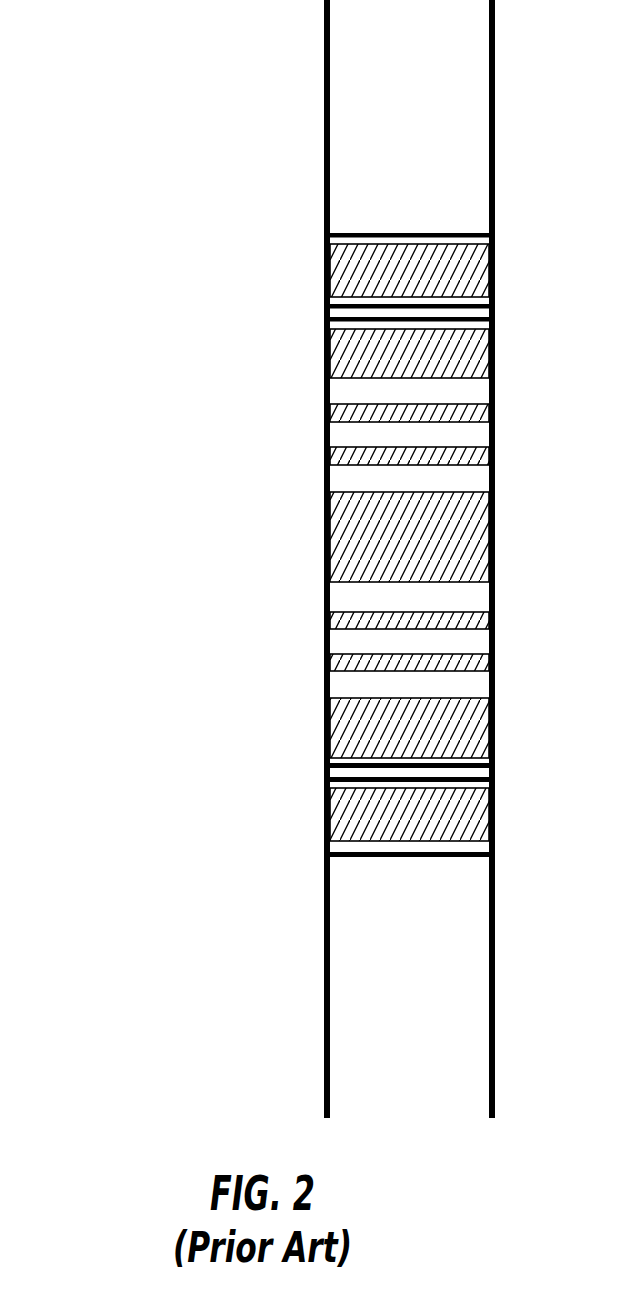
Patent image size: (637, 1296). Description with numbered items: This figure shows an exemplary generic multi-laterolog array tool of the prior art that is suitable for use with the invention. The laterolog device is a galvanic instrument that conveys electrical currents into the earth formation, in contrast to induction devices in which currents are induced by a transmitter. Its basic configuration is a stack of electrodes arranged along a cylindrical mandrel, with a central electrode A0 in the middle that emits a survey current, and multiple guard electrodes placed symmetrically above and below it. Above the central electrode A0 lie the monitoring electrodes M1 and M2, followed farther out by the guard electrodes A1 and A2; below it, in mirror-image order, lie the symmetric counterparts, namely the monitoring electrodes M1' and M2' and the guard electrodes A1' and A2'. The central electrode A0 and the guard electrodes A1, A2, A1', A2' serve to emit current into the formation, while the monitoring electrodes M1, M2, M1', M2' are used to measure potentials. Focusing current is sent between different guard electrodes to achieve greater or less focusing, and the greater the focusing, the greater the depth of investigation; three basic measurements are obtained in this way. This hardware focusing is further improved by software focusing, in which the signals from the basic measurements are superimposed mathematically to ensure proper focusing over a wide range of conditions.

The guard electrode A2 is at (270, 270).
The guard electrode A1 is at (270, 353).
The monitoring electrode M2 is at (269, 412).
The monitoring electrode M1 is at (269, 457).
The central electrode A0 is at (315, 527).
The monitoring electrode M1' is at (268, 619).
The monitoring electrode M2' is at (268, 662).
The guard electrode A1' is at (270, 731).
The guard electrode A2' is at (270, 814).